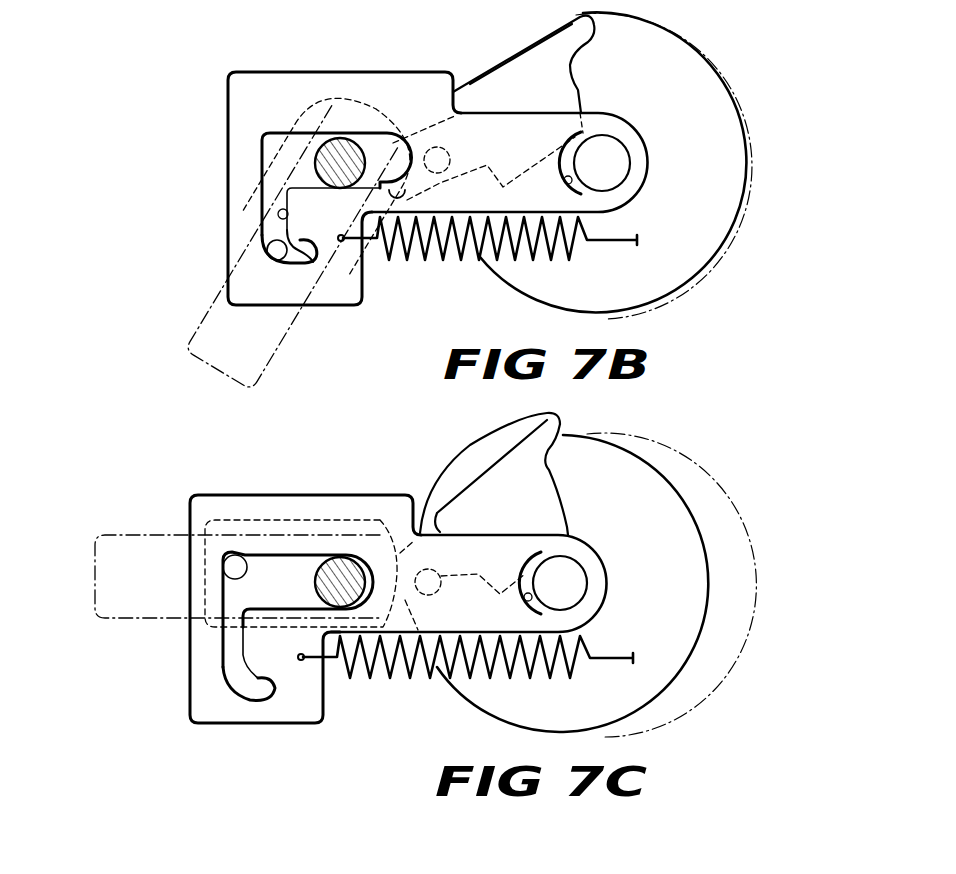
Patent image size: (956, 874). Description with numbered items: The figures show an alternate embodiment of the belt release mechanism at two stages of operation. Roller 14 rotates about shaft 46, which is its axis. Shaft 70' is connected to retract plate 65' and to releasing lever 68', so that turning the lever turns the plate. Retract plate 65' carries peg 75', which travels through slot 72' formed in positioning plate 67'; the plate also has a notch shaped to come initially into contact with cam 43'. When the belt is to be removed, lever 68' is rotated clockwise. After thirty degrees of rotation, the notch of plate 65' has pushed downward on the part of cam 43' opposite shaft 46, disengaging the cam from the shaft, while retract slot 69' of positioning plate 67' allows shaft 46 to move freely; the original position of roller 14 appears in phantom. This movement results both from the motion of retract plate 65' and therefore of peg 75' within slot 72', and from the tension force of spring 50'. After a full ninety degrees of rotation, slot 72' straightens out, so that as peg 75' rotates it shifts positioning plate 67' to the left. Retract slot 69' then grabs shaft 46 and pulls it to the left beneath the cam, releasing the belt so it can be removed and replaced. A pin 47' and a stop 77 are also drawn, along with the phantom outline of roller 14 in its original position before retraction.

In FIG. 7B, the roller 14 is at (632, 165).
In FIG. 7C, the roller 14 is at (596, 585).
In FIG. 7B, the cam 43' is at (510, 114).
In FIG. 7C, the cam 43' is at (469, 522).
In FIG. 7B, the shaft 46 is at (622, 151).
In FIG. 7C, the shaft 46 is at (579, 569).
In FIG. 7B, the link pin 47' is at (484, 157).
In FIG. 7C, the link pin 47' is at (462, 585).
In FIG. 7B, the spring 50' is at (487, 252).
In FIG. 7C, the spring 50' is at (465, 668).
In FIG. 7B, the retract plate 65' is at (336, 175).
In FIG. 7C, the retract plate 65' is at (301, 565).
In FIG. 7B, the positioning plate 67' is at (344, 175).
In FIG. 7C, the positioning plate 67' is at (287, 609).
In FIG. 7B, the releasing lever 68' is at (292, 248).
In FIG. 7C, the releasing lever 68' is at (237, 590).
In FIG. 7B, the retract slot 69' is at (561, 168).
In FIG. 7C, the retract slot 69' is at (523, 586).
In FIG. 7B, the shaft 70' is at (336, 184).
In FIG. 7C, the shaft 70' is at (298, 609).
In FIG. 7B, the slot 72' is at (329, 209).
In FIG. 7C, the slot 72' is at (254, 664).
In FIG. 7B, the peg 75' is at (296, 246).
In FIG. 7C, the peg 75' is at (249, 576).
In FIG. 7B, the stop 77 is at (411, 190).